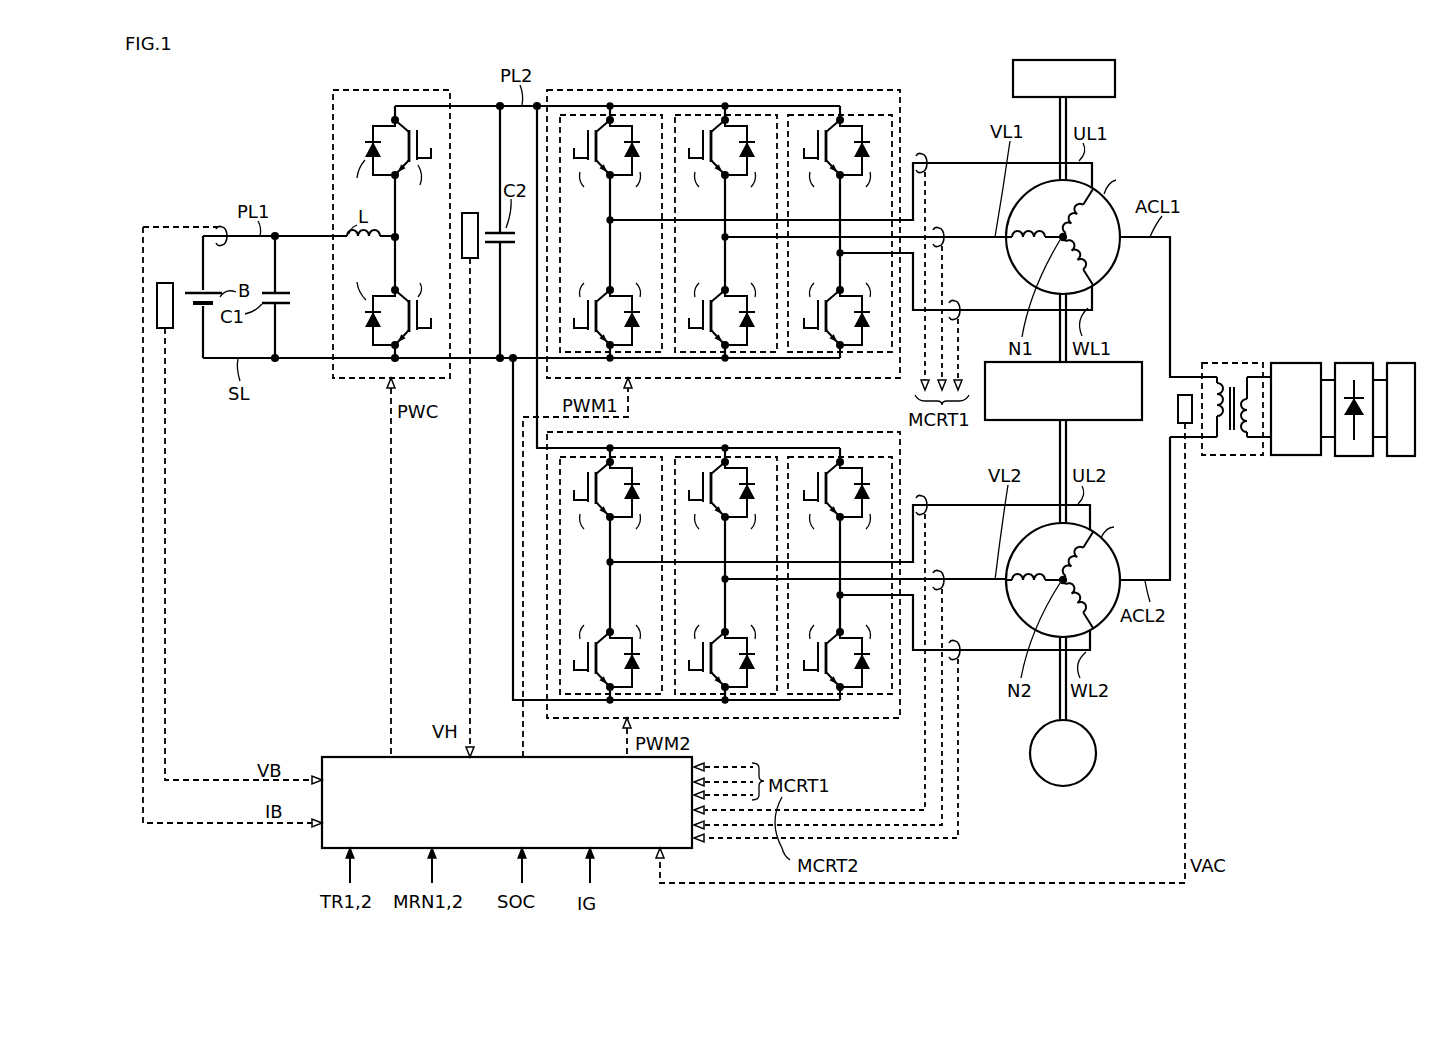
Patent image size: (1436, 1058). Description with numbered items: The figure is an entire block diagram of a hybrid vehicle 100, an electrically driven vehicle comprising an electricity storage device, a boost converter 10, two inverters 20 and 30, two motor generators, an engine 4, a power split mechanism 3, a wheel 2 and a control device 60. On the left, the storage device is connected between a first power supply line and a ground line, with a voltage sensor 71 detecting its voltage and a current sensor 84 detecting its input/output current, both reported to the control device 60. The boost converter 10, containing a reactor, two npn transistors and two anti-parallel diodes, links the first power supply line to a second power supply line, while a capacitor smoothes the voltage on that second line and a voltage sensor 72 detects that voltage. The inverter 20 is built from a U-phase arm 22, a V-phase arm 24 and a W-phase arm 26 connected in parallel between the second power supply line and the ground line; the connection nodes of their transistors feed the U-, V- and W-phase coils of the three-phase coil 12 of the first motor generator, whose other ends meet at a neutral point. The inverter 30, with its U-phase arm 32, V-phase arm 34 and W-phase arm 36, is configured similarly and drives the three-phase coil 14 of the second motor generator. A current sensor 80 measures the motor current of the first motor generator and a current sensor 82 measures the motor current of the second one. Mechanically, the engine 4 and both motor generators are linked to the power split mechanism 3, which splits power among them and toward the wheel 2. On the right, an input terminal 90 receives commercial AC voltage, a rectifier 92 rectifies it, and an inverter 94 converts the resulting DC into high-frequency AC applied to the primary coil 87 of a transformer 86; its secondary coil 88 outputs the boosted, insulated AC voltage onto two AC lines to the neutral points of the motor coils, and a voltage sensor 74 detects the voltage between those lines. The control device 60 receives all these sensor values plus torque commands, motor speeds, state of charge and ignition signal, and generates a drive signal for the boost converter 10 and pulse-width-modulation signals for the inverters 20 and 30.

The hybrid vehicle 100 is at (192, 96).
The current sensor 84 is at (222, 224).
The voltage sensor 71 is at (165, 283).
The boost converter 10 is at (348, 378).
The voltage sensor 72 is at (470, 213).
The inverter 20 is at (723, 235).
The U-phase arm 22 is at (632, 113).
The V-phase arm 24 is at (747, 113).
The W-phase arm 26 is at (862, 113).
The inverter 30 is at (723, 574).
The U-phase arm 32 is at (643, 457).
The V-phase arm 34 is at (757, 457).
The W-phase arm 36 is at (872, 457).
The current sensor 80 is at (928, 154).
The current sensor 82 is at (926, 497).
The 3-phase coil 12 is at (1073, 208).
The 3-phase coil 14 is at (1072, 552).
The engine 4 is at (1115, 78).
The power split mechanism 3 is at (1127, 362).
The wheel 2 is at (1096, 753).
The voltage sensor 74 is at (1177, 414).
The transformer 86 is at (1235, 411).
The secondary coil 88 is at (1222, 434).
The primary coil 87 is at (1244, 434).
The inverter 94 is at (1293, 363).
The rectifier 92 is at (1353, 363).
The input terminal 90 is at (1400, 363).
The control device 60 is at (342, 757).